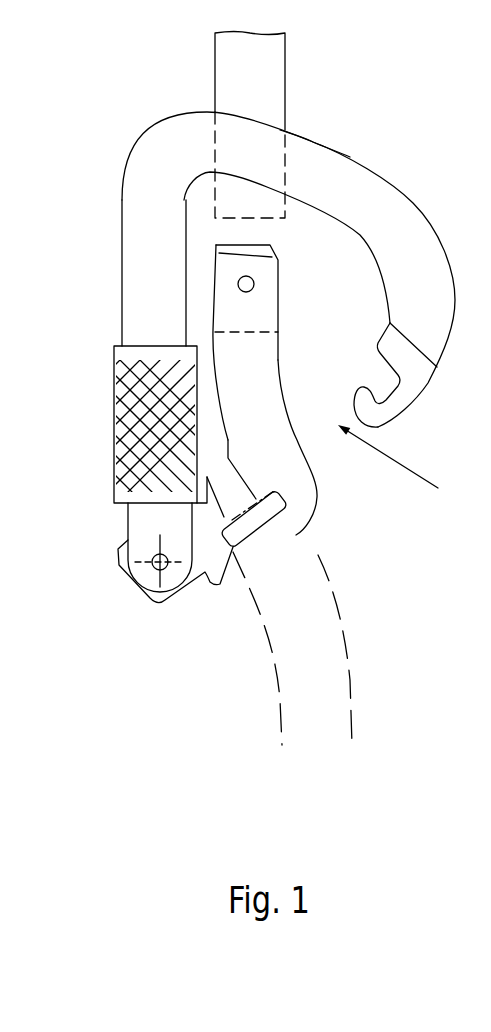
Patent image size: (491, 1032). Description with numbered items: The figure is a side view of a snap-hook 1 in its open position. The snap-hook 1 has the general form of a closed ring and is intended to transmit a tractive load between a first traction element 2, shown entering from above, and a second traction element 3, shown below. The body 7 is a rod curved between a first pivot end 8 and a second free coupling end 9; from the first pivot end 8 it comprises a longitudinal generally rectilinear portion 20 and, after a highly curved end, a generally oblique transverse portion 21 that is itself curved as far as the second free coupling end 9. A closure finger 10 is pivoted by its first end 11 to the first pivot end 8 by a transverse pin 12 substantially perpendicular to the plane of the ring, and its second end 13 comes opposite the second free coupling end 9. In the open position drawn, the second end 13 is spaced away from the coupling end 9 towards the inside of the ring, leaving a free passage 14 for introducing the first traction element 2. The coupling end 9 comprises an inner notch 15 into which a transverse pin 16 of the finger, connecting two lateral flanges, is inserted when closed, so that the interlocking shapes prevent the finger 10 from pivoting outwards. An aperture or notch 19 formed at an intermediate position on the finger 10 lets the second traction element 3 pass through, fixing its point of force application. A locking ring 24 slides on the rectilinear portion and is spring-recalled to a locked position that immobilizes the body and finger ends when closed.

The snap-hook 1 is at (370, 140).
The first traction element 2 is at (265, 70).
The second traction element 3 is at (342, 692).
The body 7 is at (402, 203).
The first pivot end 8 is at (138, 513).
The second free coupling end 9 is at (420, 383).
The closure finger 10 is at (293, 467).
The first end 11 is at (207, 558).
The transverse pin 12 is at (152, 572).
The second end 13 is at (258, 306).
The free passage 14 is at (403, 466).
The inner notch 15 is at (383, 380).
The transverse pin 16 is at (239, 282).
The aperture or notch 19 is at (260, 522).
The longitudinal generally rectilinear portion 20 is at (137, 323).
The generally oblique transverse portion 21 is at (312, 162).
The locking ring 24 is at (122, 402).